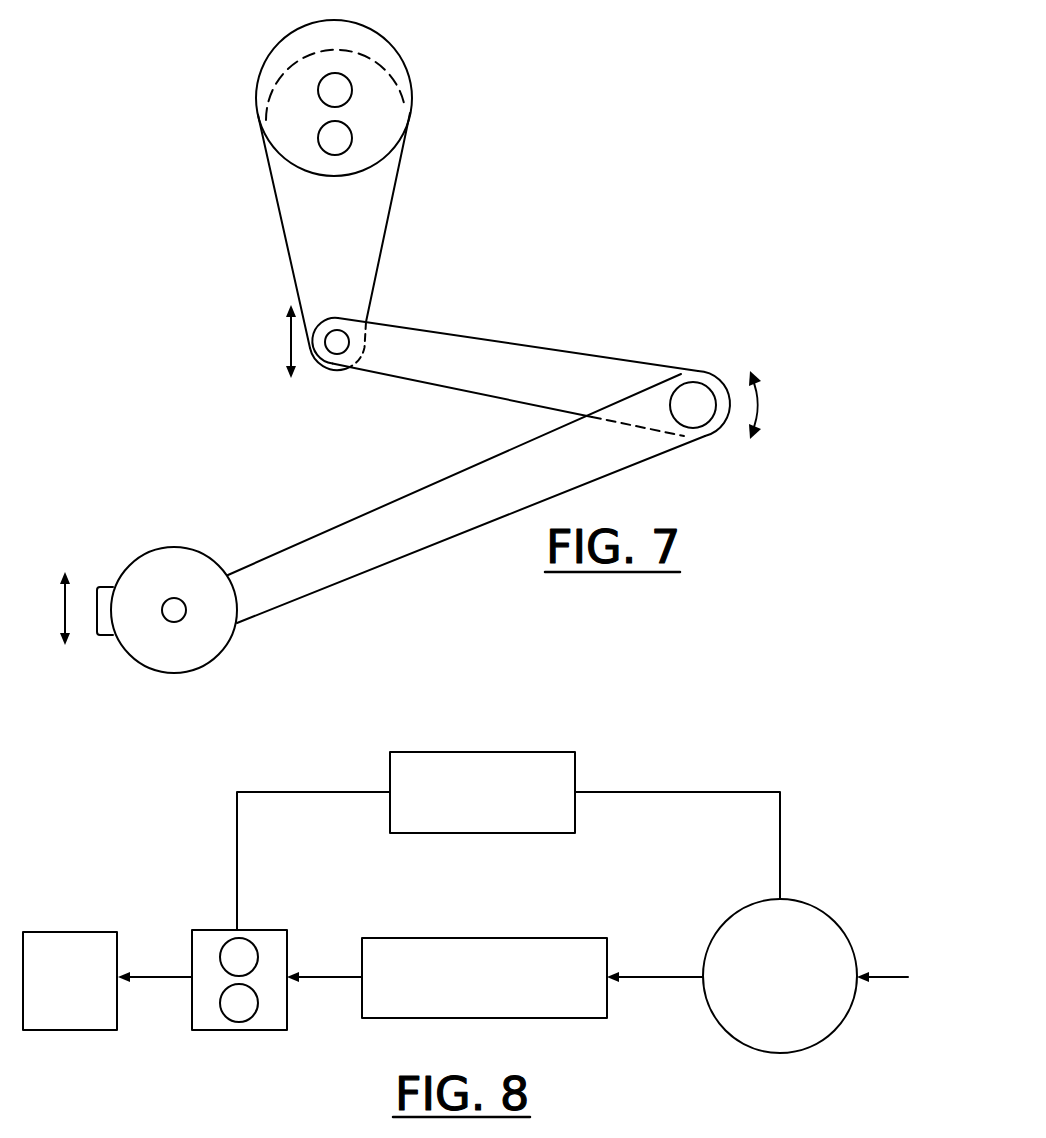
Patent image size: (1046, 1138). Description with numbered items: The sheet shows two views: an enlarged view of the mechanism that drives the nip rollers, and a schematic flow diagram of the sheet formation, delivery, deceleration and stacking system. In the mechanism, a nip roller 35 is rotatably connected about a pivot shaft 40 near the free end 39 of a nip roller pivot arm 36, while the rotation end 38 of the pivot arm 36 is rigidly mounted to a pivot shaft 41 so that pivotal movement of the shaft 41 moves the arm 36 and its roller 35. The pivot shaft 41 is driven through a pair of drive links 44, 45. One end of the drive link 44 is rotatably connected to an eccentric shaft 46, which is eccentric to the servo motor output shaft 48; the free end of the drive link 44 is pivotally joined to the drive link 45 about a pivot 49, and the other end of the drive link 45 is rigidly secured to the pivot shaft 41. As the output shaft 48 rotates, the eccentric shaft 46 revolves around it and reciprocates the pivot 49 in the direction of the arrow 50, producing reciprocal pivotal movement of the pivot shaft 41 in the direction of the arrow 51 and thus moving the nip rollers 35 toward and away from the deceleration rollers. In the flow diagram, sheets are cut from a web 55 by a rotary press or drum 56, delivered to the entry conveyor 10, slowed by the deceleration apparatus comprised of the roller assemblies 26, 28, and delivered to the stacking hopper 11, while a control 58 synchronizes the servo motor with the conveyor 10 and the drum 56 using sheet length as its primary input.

In FIG. 8, the entry conveyor 10 is at (570, 950).
In FIG. 8, the stacking hopper 11 is at (62, 1013).
In FIG. 8, the deceleration roller assembly 26 is at (248, 1007).
In FIG. 8, the nip roller assembly 28 is at (230, 962).
In FIG. 7, the nip roller 35 is at (202, 640).
In FIG. 7, the nip roller pivot arm 36 is at (402, 530).
In FIG. 7, the rotation end 38 is at (706, 360).
In FIG. 7, the free end 39 is at (108, 654).
In FIG. 7, the pivot axis or shaft 40 is at (175, 607).
In FIG. 7, the pivot shaft 41 is at (690, 408).
In FIG. 7, the drive link 44 is at (360, 238).
In FIG. 7, the drive link 45 is at (530, 367).
In FIG. 7, the eccentric shaft 46 is at (342, 140).
In FIG. 7, the servo motor output shaft 48 is at (342, 90).
In FIG. 7, the pivot 49 is at (337, 342).
In FIG. 7, the arrow 50 is at (288, 338).
In FIG. 7, the arrow 51 is at (761, 404).
In FIG. 8, the web 55 is at (887, 977).
In FIG. 8, the rotary press or drum 56 is at (768, 1017).
In FIG. 8, the control 58 is at (487, 752).